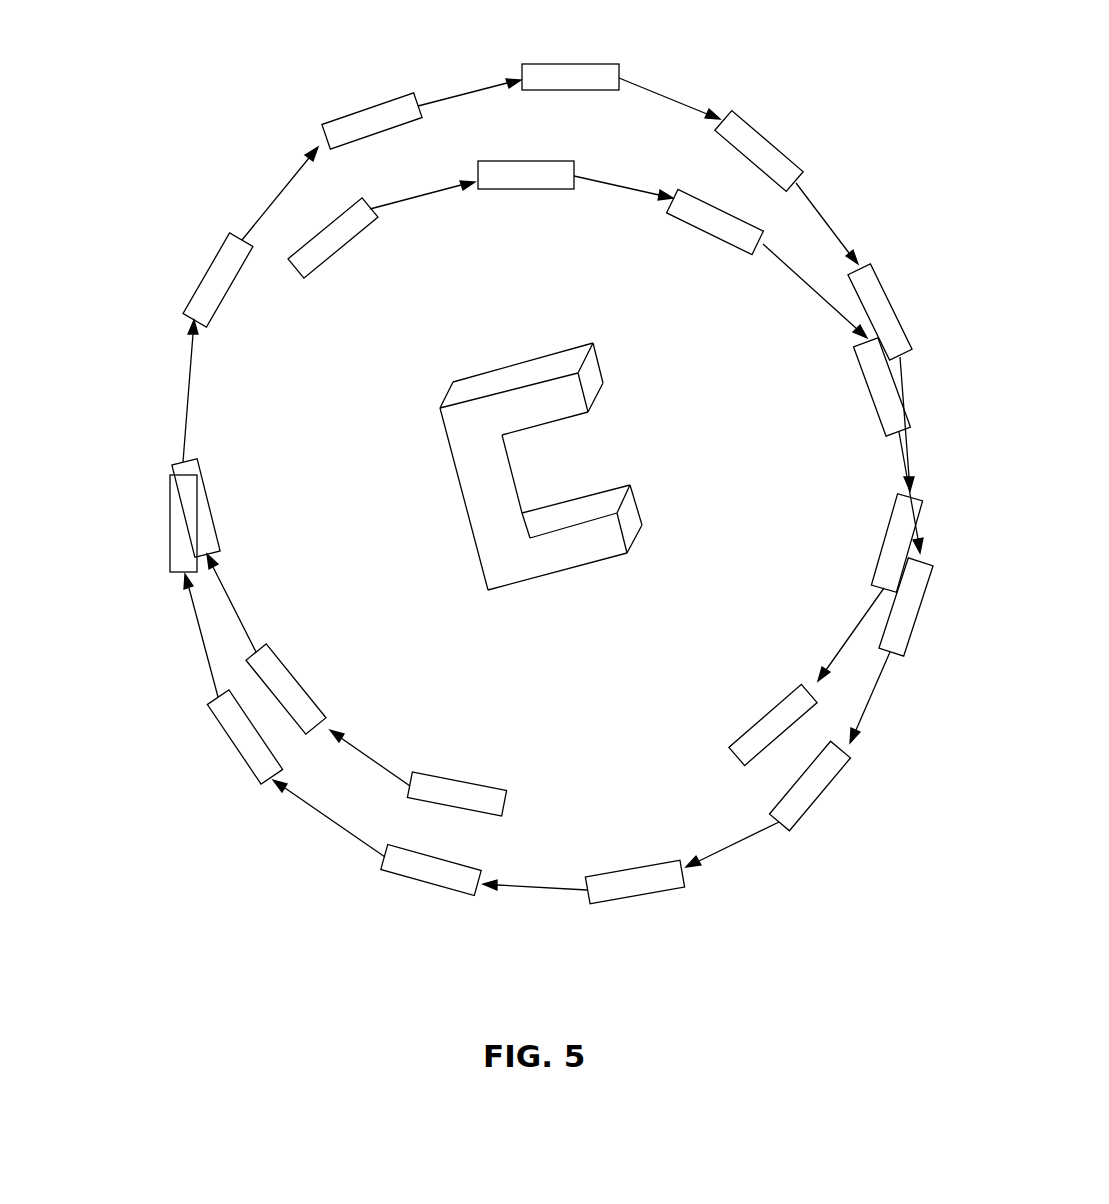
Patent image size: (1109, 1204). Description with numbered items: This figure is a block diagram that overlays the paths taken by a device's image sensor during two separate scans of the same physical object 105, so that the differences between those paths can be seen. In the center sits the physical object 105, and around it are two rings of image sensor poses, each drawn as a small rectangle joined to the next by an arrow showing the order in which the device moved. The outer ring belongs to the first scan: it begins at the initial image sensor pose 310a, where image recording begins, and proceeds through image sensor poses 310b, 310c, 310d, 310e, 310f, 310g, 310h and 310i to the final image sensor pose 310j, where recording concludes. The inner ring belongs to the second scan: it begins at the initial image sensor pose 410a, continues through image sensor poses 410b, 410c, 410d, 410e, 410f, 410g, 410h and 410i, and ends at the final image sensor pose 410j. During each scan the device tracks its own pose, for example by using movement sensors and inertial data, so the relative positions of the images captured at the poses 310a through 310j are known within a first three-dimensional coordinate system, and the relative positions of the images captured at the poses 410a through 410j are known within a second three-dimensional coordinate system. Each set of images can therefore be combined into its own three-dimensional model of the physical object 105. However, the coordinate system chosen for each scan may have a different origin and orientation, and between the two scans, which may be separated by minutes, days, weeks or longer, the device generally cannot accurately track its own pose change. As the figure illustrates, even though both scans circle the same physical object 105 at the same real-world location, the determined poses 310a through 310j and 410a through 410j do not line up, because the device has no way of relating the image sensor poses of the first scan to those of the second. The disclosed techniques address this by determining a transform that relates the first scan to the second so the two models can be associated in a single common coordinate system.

The physical object 105 is at (603, 382).
The image sensor pose 310a is at (468, 782).
The image sensor pose 310b is at (288, 668).
The image sensor pose 310c is at (212, 508).
The image sensor pose 310d is at (213, 263).
The image sensor pose 310e is at (377, 108).
The image sensor pose 310f is at (545, 64).
The image sensor pose 310g is at (770, 138).
The image sensor pose 310h is at (897, 313).
The image sensor pose 310i is at (886, 524).
The image sensor pose 310j is at (775, 707).
The image sensor pose 410a is at (338, 250).
The image sensor pose 410b is at (510, 190).
The image sensor pose 410c is at (680, 222).
The image sensor pose 410d is at (868, 383).
The image sensor pose 410e is at (918, 613).
The image sensor pose 410f is at (818, 800).
The image sensor pose 410g is at (630, 900).
The image sensor pose 410h is at (415, 882).
The image sensor pose 410i is at (224, 743).
The image sensor pose 410j is at (170, 515).